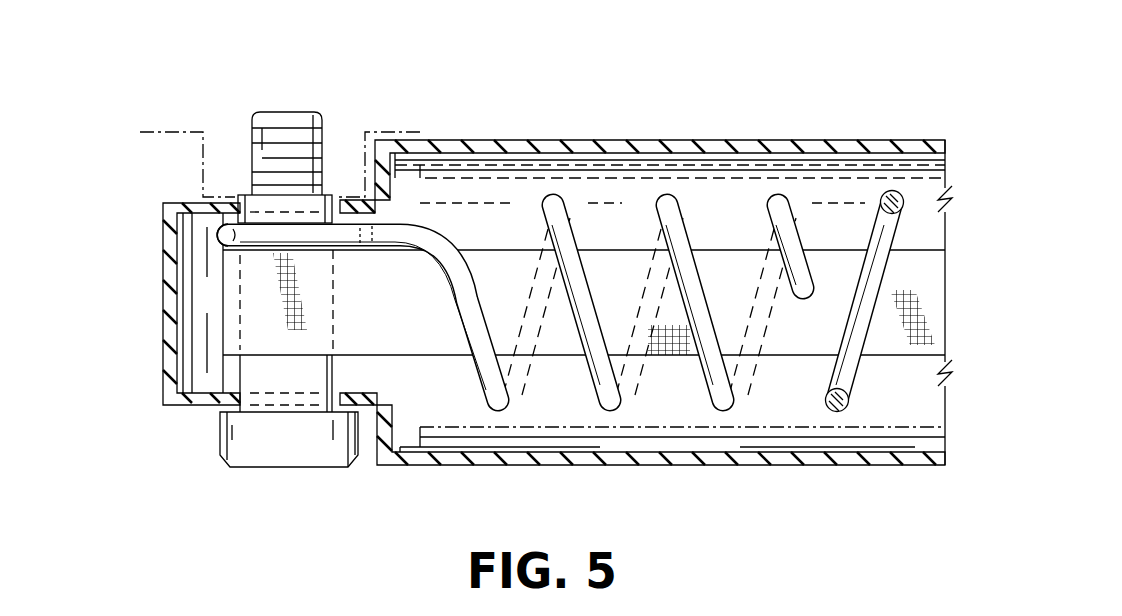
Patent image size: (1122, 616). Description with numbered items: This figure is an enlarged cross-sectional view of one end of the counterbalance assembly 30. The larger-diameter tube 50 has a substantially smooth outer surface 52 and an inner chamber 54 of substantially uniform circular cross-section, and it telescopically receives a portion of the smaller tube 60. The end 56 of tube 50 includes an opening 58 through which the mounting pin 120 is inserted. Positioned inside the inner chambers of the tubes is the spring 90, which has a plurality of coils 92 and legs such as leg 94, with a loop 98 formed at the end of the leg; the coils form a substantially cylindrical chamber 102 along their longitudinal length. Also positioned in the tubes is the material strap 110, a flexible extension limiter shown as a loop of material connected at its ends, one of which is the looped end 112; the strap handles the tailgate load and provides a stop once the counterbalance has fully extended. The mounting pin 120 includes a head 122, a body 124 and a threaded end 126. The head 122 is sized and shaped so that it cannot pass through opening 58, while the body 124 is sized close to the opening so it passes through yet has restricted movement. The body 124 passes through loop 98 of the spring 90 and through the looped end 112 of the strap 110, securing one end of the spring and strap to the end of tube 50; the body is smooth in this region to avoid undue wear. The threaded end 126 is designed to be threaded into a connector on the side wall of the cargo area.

The counterbalance assembly 30 is at (646, 268).
The tube 50 is at (722, 135).
The outer surface 52 is at (645, 138).
The inner chamber 54 is at (733, 193).
The end 56 is at (163, 350).
The opening 58 is at (240, 202).
The tube 60 is at (780, 452).
The spring 90 is at (720, 412).
The coils 92 is at (593, 362).
The leg 94 is at (387, 230).
The loop 98 is at (218, 235).
The cylindrical chamber 102 is at (607, 237).
The material strap 110 is at (887, 355).
The looped end 112 is at (222, 305).
The mounting pin 120 is at (220, 448).
The head 122 is at (330, 445).
The body 124 is at (252, 363).
The threaded end 126 is at (270, 127).